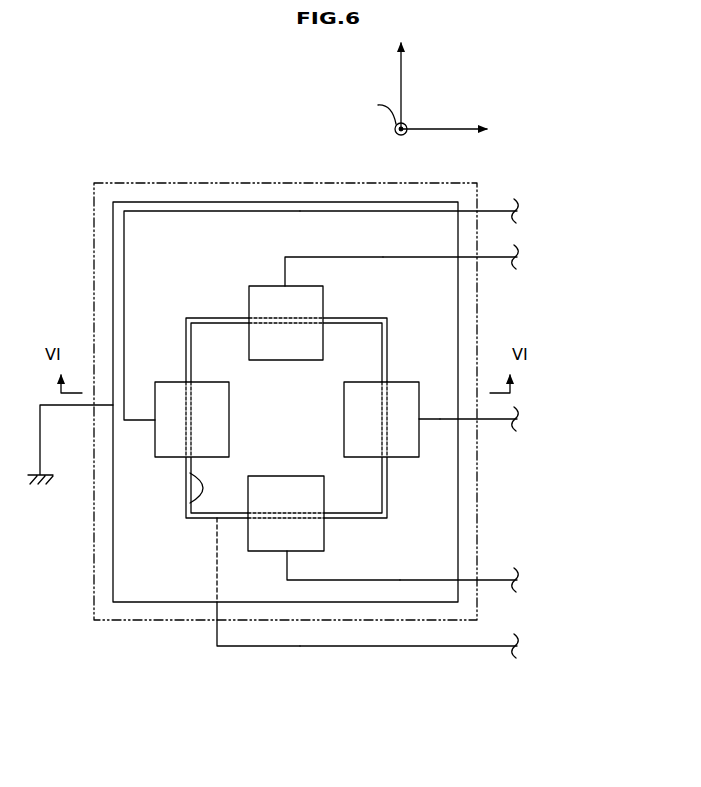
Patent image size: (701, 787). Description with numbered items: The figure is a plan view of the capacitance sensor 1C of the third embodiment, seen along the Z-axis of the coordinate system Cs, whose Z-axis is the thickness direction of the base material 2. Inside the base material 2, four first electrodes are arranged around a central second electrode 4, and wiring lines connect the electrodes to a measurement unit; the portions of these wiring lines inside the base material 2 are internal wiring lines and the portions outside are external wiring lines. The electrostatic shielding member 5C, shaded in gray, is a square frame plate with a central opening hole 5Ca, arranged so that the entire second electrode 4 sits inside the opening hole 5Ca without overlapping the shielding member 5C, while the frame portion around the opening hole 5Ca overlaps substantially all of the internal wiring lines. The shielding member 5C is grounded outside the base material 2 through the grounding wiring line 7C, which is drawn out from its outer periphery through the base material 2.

The capacitance sensor 1C is at (176, 110).
The coordinate system Cs is at (430, 80).
The base material 2 is at (486, 277).
The second electrode 4 is at (207, 360).
The electrostatic shielding member 5C is at (133, 570).
The opening hole 5Ca is at (187, 512).
The grounding wiring line 7C is at (42, 420).